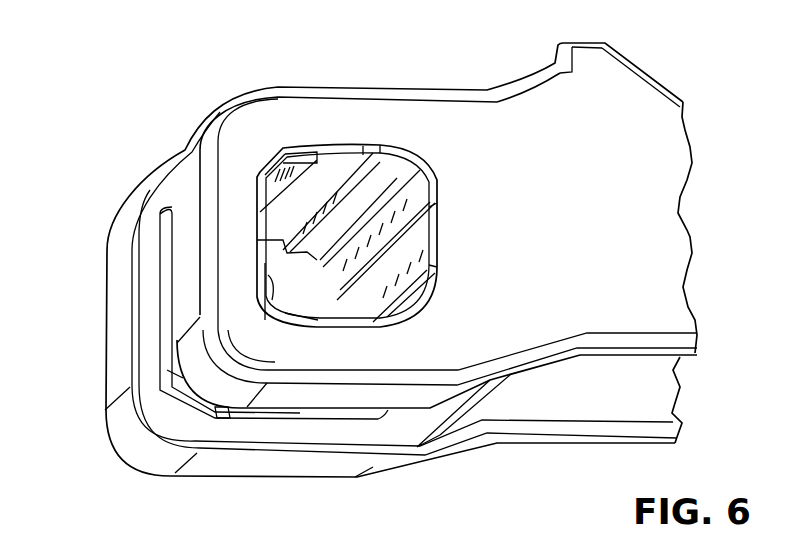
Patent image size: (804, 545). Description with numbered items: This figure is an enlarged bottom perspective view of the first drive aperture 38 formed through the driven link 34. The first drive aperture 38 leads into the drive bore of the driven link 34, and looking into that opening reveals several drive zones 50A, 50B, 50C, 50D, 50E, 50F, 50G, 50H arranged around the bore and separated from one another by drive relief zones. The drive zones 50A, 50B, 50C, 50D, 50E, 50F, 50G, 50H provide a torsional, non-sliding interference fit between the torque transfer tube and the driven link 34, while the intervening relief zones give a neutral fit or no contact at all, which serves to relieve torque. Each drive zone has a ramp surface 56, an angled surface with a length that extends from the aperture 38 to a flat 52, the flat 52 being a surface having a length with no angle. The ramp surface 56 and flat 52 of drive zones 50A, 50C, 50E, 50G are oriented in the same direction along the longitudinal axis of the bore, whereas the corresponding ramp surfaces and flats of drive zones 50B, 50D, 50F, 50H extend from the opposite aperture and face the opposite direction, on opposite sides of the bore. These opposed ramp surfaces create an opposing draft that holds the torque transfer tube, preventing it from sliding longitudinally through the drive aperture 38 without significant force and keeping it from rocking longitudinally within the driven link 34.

The driven link 34 is at (430, 115).
The first drive aperture 38 is at (263, 283).
The drive zone 50A is at (400, 142).
The drive zone 50B is at (440, 188).
The drive zone 50C is at (443, 285).
The drive zone 50D is at (397, 330).
The drive zone 50E is at (305, 330).
The drive zone 50F is at (253, 295).
The drive zone 50G is at (250, 181).
The drive zone 50H is at (300, 143).
The flat 52 is at (327, 232).
The ramp surface 56 is at (360, 203).